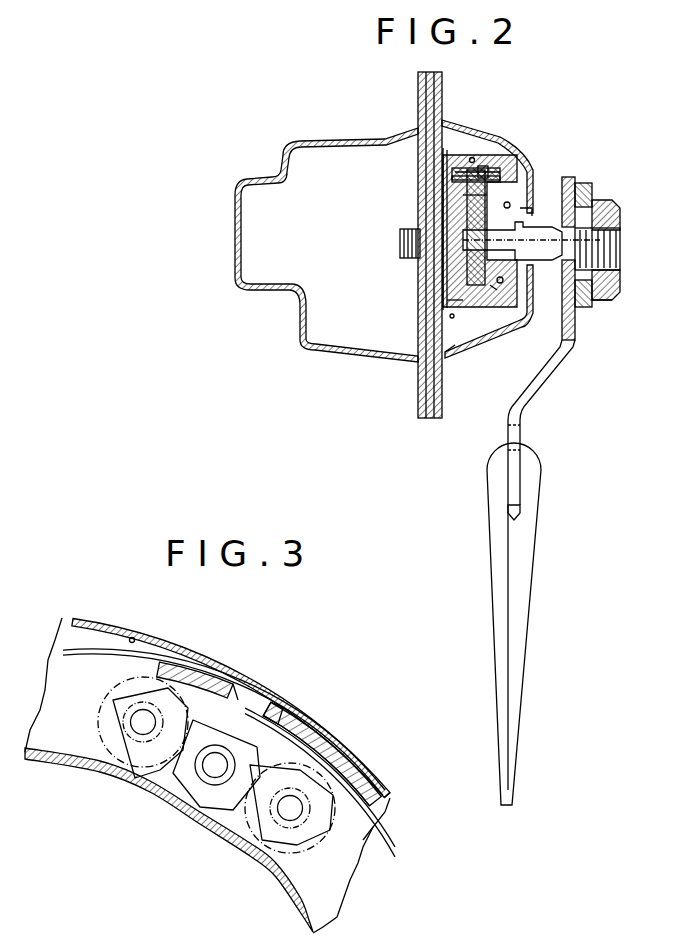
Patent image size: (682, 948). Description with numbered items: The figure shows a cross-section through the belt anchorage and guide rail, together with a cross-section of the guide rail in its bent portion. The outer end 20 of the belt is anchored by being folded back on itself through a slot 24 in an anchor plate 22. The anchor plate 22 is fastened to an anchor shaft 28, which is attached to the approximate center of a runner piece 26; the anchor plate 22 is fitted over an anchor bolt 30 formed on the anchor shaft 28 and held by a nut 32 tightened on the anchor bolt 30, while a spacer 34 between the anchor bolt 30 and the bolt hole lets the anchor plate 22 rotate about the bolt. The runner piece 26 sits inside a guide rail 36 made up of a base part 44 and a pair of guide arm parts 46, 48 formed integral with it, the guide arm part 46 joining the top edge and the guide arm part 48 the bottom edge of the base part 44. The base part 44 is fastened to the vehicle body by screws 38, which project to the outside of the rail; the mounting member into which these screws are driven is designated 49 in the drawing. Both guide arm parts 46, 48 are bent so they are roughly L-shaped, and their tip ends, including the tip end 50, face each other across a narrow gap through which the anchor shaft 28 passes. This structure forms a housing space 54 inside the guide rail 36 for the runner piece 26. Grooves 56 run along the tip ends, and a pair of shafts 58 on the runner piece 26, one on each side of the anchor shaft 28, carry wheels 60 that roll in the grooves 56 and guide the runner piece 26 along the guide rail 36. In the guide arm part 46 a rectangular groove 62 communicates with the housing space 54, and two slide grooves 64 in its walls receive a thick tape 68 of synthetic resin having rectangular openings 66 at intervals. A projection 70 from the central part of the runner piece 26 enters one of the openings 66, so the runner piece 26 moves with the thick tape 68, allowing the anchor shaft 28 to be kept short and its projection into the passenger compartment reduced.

In FIG. 2, the outer end 20 is at (540, 513).
In FIG. 2, the anchor plate 22 is at (538, 397).
In FIG. 2, the slot 24 is at (513, 470).
In FIG. 2, the runner piece 26 is at (470, 272).
In FIG. 3, the runner piece 26 is at (283, 754).
In FIG. 2, the anchor shaft 28 is at (543, 257).
In FIG. 2, the anchor bolt 30 is at (608, 238).
In FIG. 3, the anchor bolt 30 is at (197, 806).
In FIG. 2, the nut 32 is at (600, 293).
In FIG. 2, the spacer 34 is at (590, 192).
In FIG. 2, the guide rail 36 is at (477, 318).
In FIG. 3, the guide rail 36 is at (356, 745).
In FIG. 2, the screws 38 is at (400, 240).
In FIG. 2, the base part 44 is at (465, 195).
In FIG. 3, the base part 44 is at (352, 838).
In FIG. 2, the guide arm part 46 is at (465, 148).
In FIG. 3, the guide arm part 46 is at (226, 660).
In FIG. 2, the guide arm part 48 is at (470, 322).
In FIG. 3, the guide arm part 48 is at (246, 862).
In FIG. 2, the mounting plate 49 is at (456, 348).
In FIG. 2, the tip end 50 is at (532, 207).
In FIG. 3, the housing space 54 is at (93, 711).
In FIG. 2, the grooves 56 is at (508, 204).
In FIG. 2, the shafts 58 is at (478, 230).
In FIG. 3, the shafts 58 is at (137, 727).
In FIG. 2, the wheels 60 is at (493, 287).
In FIG. 3, the wheels 60 is at (98, 728).
In FIG. 2, the rectangular groove 62 is at (468, 157).
In FIG. 3, the rectangular groove 62 is at (134, 638).
In FIG. 2, the slide grooves 64 is at (492, 172).
In FIG. 3, the slide grooves 64 is at (97, 645).
In FIG. 3, the rectangular openings 66 is at (270, 716).
In FIG. 2, the thick tape 68 is at (455, 172).
In FIG. 3, the thick tape 68 is at (392, 822).
In FIG. 2, the projection 70 is at (481, 173).
In FIG. 3, the projection 70 is at (243, 708).